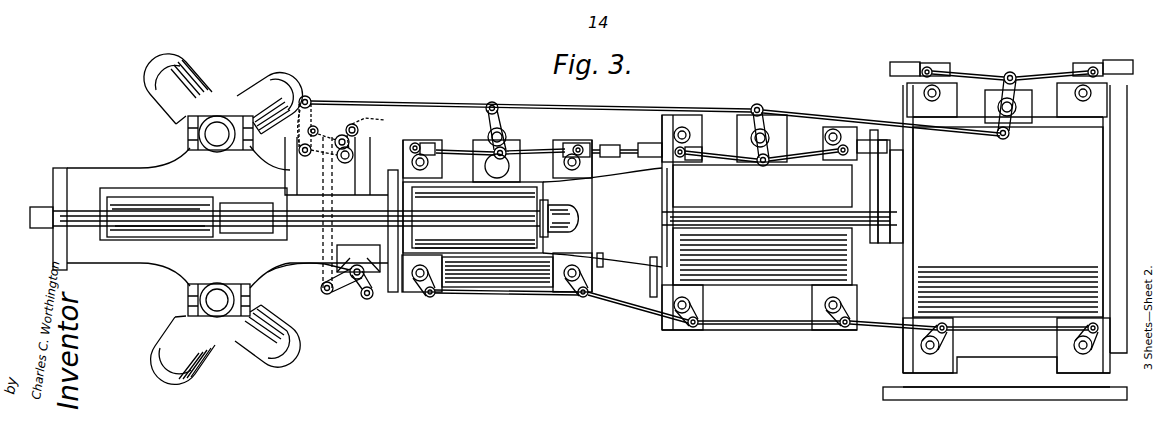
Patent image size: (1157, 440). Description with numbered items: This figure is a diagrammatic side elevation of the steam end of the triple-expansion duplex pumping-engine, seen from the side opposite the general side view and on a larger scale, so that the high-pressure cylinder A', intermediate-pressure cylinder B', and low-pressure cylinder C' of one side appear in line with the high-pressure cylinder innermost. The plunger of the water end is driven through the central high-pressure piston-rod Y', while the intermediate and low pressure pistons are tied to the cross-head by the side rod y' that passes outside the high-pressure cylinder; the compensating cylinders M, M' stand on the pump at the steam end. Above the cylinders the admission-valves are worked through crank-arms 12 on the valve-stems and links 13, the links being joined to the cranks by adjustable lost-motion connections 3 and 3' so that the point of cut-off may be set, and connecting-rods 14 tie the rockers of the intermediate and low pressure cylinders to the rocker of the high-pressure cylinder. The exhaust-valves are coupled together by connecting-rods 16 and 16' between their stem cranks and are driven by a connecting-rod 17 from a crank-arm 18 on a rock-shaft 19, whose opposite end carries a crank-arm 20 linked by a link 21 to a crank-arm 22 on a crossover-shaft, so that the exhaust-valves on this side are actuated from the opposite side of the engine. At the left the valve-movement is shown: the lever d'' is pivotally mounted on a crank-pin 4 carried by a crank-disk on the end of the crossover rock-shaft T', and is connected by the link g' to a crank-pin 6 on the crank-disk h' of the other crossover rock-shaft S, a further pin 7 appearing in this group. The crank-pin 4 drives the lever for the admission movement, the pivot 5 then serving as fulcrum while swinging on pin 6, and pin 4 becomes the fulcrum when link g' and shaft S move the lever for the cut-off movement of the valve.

The compensating cylinders M is at (223, 103).
The steam cylinder M' is at (226, 333).
The central high-pressure piston-rod Y' is at (209, 213).
The side rod y' is at (475, 211).
The rock shaft d'' is at (289, 128).
The rock arm T' is at (295, 119).
The crank-pins 4 is at (299, 150).
The pivots 5 is at (315, 122).
The link g' is at (333, 132).
The pin 7 is at (354, 125).
The crank-pin 6 is at (358, 136).
The crank-disk h' is at (371, 128).
The crossover rock-shaft S is at (356, 150).
The crank-arms 22 is at (333, 164).
The links 21 is at (322, 266).
The rock-shafts 19 is at (364, 263).
The crank-arms 18 is at (373, 288).
The crank-arms 20 is at (349, 283).
The connecting-rods 17 is at (405, 292).
The high-pressure cylinder A' is at (527, 218).
The connecting-rods 16 is at (561, 306).
The connecting-rods 14 is at (611, 98).
The low-pressure cylinder C' is at (806, 236).
The arm 3' is at (648, 167).
The intermediate-pressure cylinder B' is at (782, 222).
The crank-arms 12 is at (686, 152).
The adjustable lost-motion connections 3 is at (1011, 61).
The links 13 is at (730, 163).
The connecting rod 16' is at (904, 345).